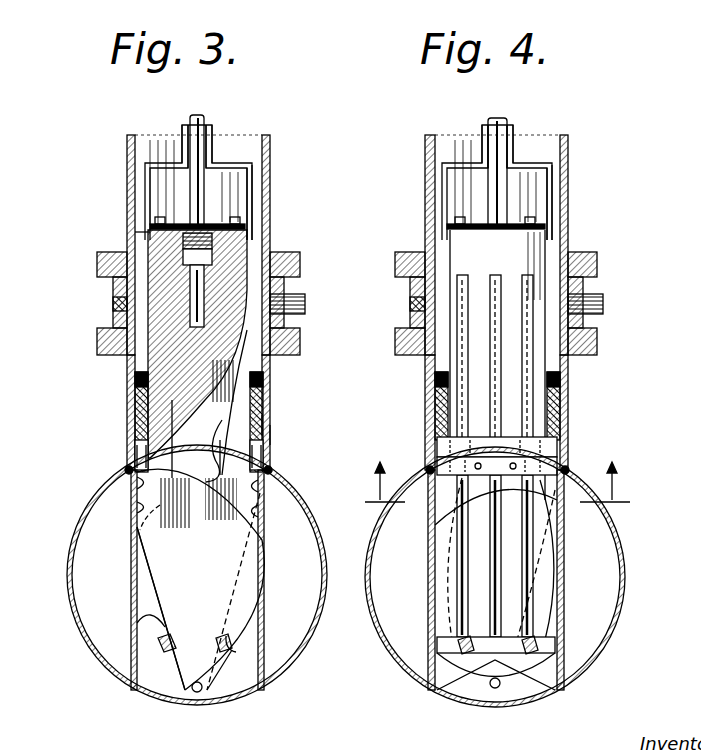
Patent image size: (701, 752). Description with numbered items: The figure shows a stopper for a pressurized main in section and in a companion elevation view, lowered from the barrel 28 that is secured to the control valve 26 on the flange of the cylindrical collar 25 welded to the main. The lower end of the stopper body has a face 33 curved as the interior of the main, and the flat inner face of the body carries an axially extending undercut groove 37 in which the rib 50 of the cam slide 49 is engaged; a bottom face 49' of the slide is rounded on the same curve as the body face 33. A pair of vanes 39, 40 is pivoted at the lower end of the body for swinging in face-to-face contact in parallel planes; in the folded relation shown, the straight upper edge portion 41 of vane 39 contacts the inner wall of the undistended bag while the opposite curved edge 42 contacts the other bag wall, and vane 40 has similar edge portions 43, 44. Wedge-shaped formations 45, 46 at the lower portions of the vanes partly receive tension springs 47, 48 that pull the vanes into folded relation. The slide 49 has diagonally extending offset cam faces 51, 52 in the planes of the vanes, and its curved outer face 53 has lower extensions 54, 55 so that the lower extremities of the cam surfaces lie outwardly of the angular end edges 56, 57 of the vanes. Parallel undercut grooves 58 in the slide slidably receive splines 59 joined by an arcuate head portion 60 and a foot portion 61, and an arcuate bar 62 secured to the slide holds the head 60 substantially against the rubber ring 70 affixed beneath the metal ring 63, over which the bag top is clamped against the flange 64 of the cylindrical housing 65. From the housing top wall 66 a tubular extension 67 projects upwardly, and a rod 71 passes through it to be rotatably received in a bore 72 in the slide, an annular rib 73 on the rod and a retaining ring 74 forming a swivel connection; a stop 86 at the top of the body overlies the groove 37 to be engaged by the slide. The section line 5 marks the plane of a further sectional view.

In FIG. 4, the section line 5- 5 is at (495, 482).
In FIG. 3, the cylindrical collar 25 is at (270, 433).
In FIG. 3, the control valve 26 is at (113, 304).
In FIG. 4, the control valve 26 is at (410, 304).
In FIG. 3, the barrel or elongated bonnet 28 is at (127, 152).
In FIG. 4, the barrel or elongated bonnet 28 is at (568, 150).
In FIG. 3, the bottom face of the body 33 is at (237, 688).
In FIG. 3, the undercut groove 37 is at (170, 432).
In FIG. 4, the undercut groove 37 is at (496, 580).
In FIG. 3, the vane 39 is at (260, 487).
In FIG. 4, the vane 39 is at (548, 524).
In FIG. 3, the vane 40 is at (147, 522).
In FIG. 4, the vane 40 is at (437, 530).
In FIG. 3, the upper edge portion of vane 41 is at (260, 511).
In FIG. 3, the curved edge of vane 42 is at (214, 462).
In FIG. 3, the edge portion of vane 43 is at (137, 508).
In FIG. 3, the edge portion of vane 44 is at (182, 478).
In FIG. 3, the wedge-shaped formation 45 is at (160, 652).
In FIG. 3, the wedge-shaped formation 46 is at (232, 650).
In FIG. 3, the tension spring 47 is at (140, 620).
In FIG. 3, the tension spring 48 is at (230, 634).
In FIG. 3, the cam slide 49 is at (241, 340).
In FIG. 4, the cam slide 49 is at (440, 335).
In FIG. 4, the bottom face of the slide 49' is at (602, 498).
In FIG. 3, the rib 50 is at (263, 425).
In FIG. 3, the cam face 51 is at (215, 396).
In FIG. 3, the cam face 52 is at (212, 363).
In FIG. 4, the curved outer face of slide 53 is at (510, 250).
In FIG. 3, the lower extension of slide 54 is at (262, 455).
In FIG. 3, the lower extension of slide 55 is at (126, 467).
In FIG. 3, the angular end edge of vane 56 is at (271, 472).
In FIG. 3, the angular end edge of vane 57 is at (137, 482).
In FIG. 4, the undercut grooves 58 is at (492, 352).
In FIG. 4, the splines 59 is at (490, 555).
In FIG. 3, the arcuate head portion 60 is at (137, 448).
In FIG. 4, the arcuate head portion 60 is at (562, 442).
In FIG. 4, the foot portion 61 is at (445, 688).
In FIG. 4, the arcuate bar 62 is at (562, 462).
In FIG. 3, the metal ring 63 is at (135, 394).
In FIG. 4, the metal ring 63 is at (497, 406).
In FIG. 3, the flange 64 is at (135, 378).
In FIG. 3, the cylindrical housing 65 is at (252, 190).
In FIG. 4, the cylindrical housing 65 is at (552, 182).
In FIG. 3, the top wall of housing 66 is at (232, 165).
In FIG. 4, the top wall of housing 66 is at (525, 163).
In FIG. 3, the tubular extension 67 is at (205, 125).
In FIG. 4, the tubular extension 67 is at (513, 125).
In FIG. 3, the rubber body ring 70 is at (270, 402).
In FIG. 4, the rubber body ring 70 is at (568, 398).
In FIG. 3, the rod 71 is at (204, 190).
In FIG. 4, the rod 71 is at (507, 190).
In FIG. 3, the bore 72 is at (185, 292).
In FIG. 3, the annular rib 73 is at (183, 244).
In FIG. 3, the retaining ring 74 is at (142, 232).
In FIG. 3, the stop 86 is at (218, 224).
In FIG. 4, the stop 86 is at (518, 224).